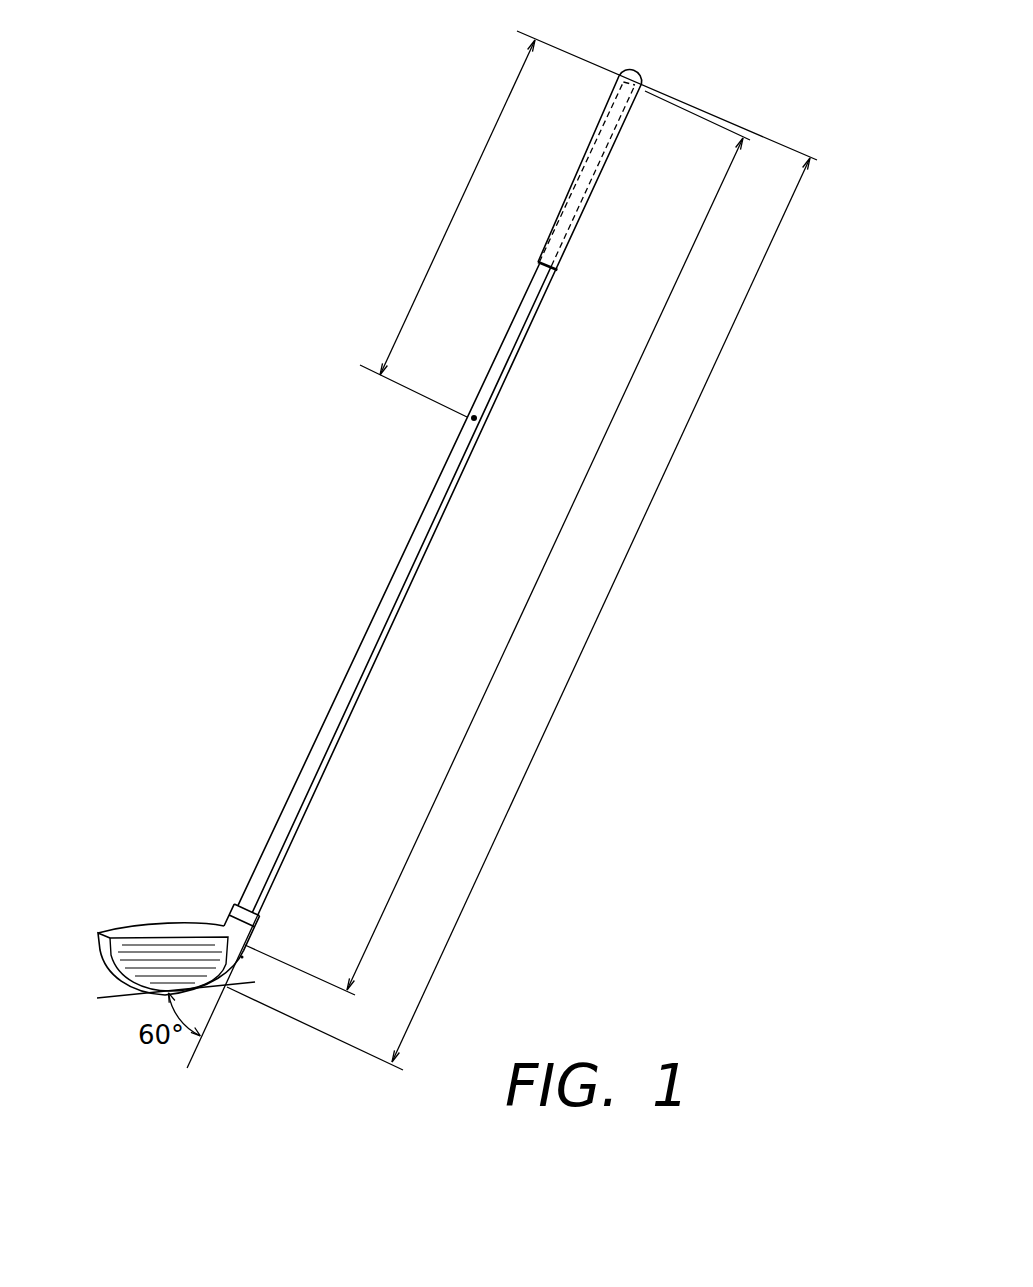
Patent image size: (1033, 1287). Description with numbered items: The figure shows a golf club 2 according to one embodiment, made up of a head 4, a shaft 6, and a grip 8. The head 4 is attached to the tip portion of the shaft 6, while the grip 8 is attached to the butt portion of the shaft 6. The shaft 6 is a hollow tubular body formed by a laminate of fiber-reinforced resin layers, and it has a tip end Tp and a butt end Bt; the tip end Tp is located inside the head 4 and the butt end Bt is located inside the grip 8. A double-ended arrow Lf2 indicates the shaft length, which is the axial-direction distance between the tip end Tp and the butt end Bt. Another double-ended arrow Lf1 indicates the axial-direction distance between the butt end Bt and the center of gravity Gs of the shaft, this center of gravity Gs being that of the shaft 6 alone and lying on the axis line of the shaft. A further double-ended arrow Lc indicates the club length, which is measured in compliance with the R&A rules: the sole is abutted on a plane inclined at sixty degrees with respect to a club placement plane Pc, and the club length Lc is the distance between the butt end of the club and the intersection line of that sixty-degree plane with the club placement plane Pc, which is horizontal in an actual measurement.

The golf club 2 is at (370, 151).
The head 4 is at (162, 925).
The shaft 6 is at (527, 297).
The grip 8 is at (563, 237).
The butt end Bt is at (633, 66).
The center of gravity of the shaft Gs is at (468, 422).
The tip end Tp is at (242, 958).
The club placement plane Pc is at (190, 1052).
The axial-direction distance between the butt end and the center of gravity of the s Lf1 is at (588, 224).
The shaft length Lf2 is at (497, 543).
The club length Lc is at (518, 614).